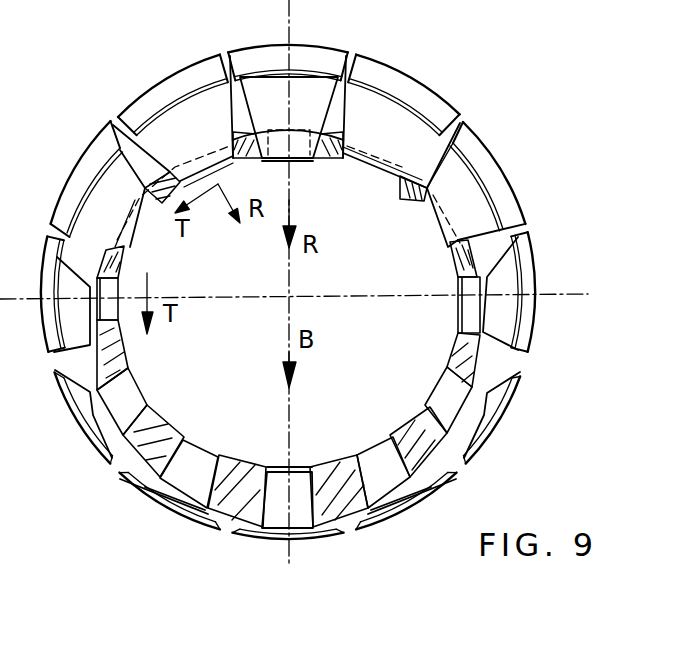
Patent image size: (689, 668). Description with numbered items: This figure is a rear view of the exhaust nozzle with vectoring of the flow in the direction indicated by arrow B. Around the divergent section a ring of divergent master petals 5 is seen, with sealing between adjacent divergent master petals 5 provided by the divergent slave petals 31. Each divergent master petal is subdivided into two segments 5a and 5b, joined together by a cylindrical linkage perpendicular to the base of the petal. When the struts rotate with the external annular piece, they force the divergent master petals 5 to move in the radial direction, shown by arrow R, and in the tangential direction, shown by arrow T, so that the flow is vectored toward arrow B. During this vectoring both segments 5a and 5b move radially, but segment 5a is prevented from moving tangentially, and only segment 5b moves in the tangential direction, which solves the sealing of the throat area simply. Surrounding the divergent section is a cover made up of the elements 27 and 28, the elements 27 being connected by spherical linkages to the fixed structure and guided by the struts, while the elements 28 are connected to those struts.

The divergent master petal 5 is at (306, 165).
The segment of divergent master petal 5a is at (300, 463).
The segment of divergent master petal 5b is at (302, 515).
The cover element 27 is at (513, 193).
The cover element 28 is at (467, 193).
The divergent slave petal 31 is at (393, 212).